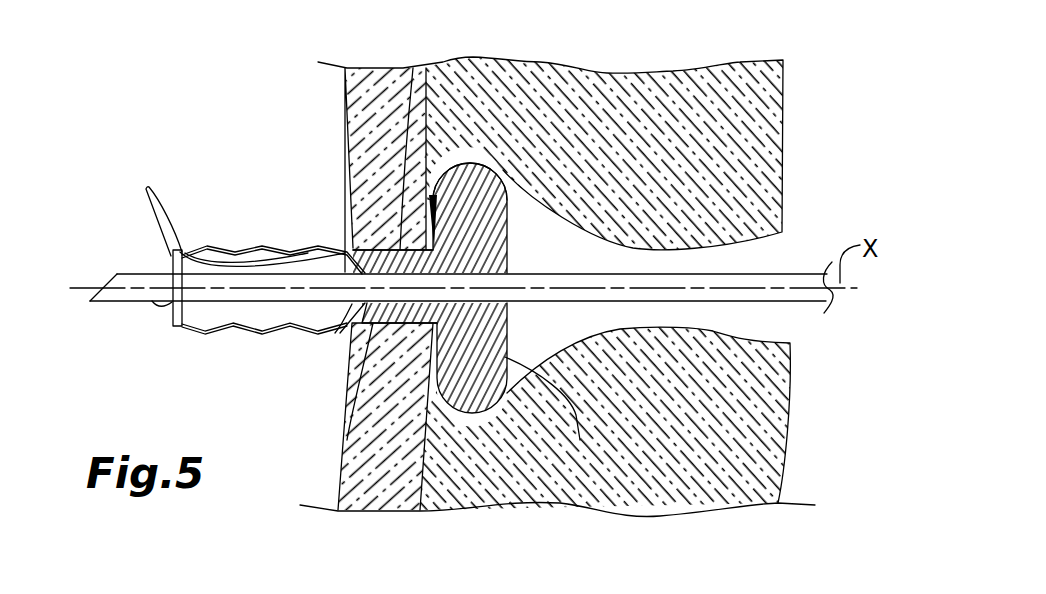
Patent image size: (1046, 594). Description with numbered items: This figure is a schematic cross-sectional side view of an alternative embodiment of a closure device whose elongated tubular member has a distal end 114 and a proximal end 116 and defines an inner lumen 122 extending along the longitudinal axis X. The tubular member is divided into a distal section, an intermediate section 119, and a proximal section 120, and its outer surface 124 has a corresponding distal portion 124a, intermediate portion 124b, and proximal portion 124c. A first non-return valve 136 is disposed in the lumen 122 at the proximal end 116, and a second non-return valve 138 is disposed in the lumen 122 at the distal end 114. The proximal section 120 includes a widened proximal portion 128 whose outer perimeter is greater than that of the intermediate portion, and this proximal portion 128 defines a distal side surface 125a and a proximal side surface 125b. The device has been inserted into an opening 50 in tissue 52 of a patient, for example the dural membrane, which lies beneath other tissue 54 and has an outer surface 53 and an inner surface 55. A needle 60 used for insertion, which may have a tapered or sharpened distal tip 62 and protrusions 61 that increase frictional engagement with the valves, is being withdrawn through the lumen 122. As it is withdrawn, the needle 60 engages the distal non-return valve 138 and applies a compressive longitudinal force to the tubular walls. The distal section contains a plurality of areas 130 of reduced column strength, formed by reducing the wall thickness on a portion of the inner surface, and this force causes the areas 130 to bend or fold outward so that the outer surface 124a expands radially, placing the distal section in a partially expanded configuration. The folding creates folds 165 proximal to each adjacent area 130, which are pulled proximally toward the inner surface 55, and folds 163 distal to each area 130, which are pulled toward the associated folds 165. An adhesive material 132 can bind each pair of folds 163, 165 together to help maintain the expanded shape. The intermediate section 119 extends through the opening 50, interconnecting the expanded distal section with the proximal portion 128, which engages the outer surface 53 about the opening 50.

The opening 50 is at (473, 163).
The tissue 52 is at (385, 95).
The outer surface 53 is at (423, 485).
The other tissue 54 is at (750, 93).
The inner surface 55 is at (342, 489).
The needle 60 is at (800, 302).
The protrusions 61 is at (170, 267).
The distal tip 62 is at (92, 303).
The distal end 114 is at (167, 317).
The proximal end 116 is at (513, 312).
The intermediate section 119 is at (350, 398).
The proximal section 120 is at (492, 213).
The inner lumen 122 is at (337, 312).
The outer surface 124 is at (237, 247).
The distal portion of outer surface 124a is at (292, 247).
The intermediate portion of outer surface 124b is at (345, 250).
The proximal portion of outer surface 124c is at (498, 160).
The distal side surface 125a is at (347, 443).
The proximal side surface 125b is at (580, 440).
The proximal portion 128 is at (705, 42).
The areas of reduced column strength 130 is at (320, 243).
The adhesive material 132 is at (135, 217).
The first non-return valve 136 is at (507, 268).
The second non-return valve 138 is at (172, 258).
The folds 163 is at (198, 333).
The folds 165 is at (217, 333).